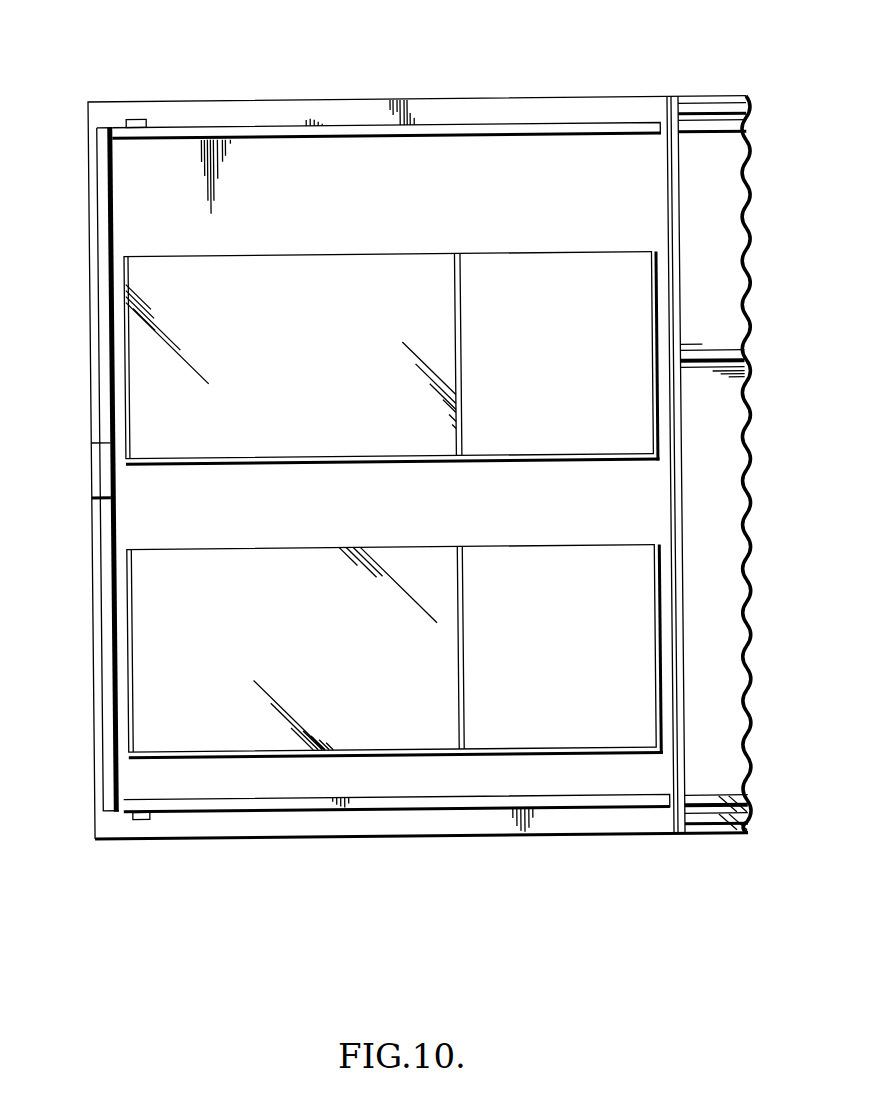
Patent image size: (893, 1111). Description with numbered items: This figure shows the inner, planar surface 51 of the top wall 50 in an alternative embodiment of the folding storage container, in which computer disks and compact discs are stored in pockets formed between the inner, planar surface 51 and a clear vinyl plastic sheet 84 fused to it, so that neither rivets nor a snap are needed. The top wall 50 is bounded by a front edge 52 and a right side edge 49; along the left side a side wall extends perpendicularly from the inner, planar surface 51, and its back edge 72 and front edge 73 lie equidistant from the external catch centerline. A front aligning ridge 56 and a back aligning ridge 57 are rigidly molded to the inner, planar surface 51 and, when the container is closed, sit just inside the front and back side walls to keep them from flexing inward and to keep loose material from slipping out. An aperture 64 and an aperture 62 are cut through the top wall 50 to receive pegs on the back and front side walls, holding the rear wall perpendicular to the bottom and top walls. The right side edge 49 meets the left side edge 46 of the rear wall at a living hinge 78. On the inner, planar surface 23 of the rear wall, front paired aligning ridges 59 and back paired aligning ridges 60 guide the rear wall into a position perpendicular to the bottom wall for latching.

The back edge of the side wall 72 is at (89, 103).
The aperture 64 is at (134, 119).
The upper panel 84 is at (288, 283).
The back aligning ridge 57 is at (445, 122).
The back paired aligning ridges 60 is at (697, 107).
The inner, planar surface of the top wall 51 is at (385, 209).
The inner, planar surface of the rear wall 23 is at (689, 193).
The front edge of the side wall 73 is at (108, 813).
The front aligning ridge 56 is at (125, 813).
The aperture 62 is at (150, 819).
The front edge of the top wall 52 is at (210, 840).
The top wall 50 is at (297, 830).
The right side edge of the top wall 49 is at (672, 813).
The hinge 78 is at (685, 827).
The left side edge of the rear wall 46 is at (707, 835).
The front paired aligning ridges 59 is at (743, 835).